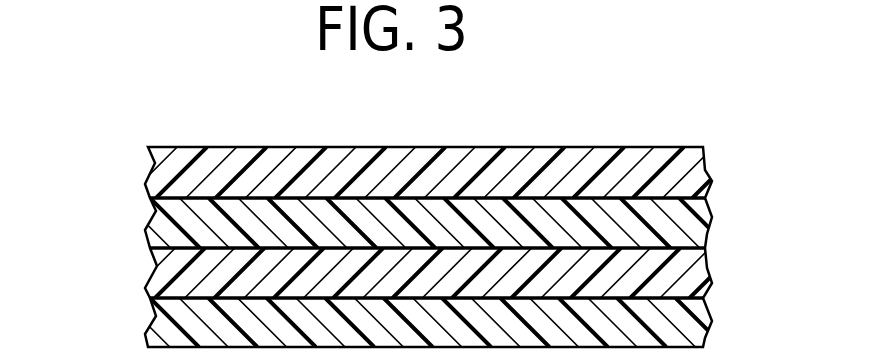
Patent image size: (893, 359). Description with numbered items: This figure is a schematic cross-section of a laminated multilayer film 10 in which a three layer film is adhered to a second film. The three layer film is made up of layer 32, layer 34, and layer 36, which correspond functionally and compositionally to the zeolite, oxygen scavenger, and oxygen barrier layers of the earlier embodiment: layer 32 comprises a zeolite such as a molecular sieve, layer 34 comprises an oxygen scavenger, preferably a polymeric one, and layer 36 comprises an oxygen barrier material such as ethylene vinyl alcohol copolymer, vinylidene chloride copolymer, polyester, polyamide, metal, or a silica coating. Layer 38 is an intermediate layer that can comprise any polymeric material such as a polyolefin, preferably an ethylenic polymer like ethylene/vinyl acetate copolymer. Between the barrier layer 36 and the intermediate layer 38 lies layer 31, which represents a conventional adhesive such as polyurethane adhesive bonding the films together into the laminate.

The multilayer film 10 is at (538, 115).
The adhesive 31 is at (150, 198).
The zeolite layer 32 is at (677, 318).
The oxygen scavenger layer 34 is at (693, 270).
The oxygen barrier layer 36 is at (690, 167).
The intermediate layer 38 is at (677, 219).